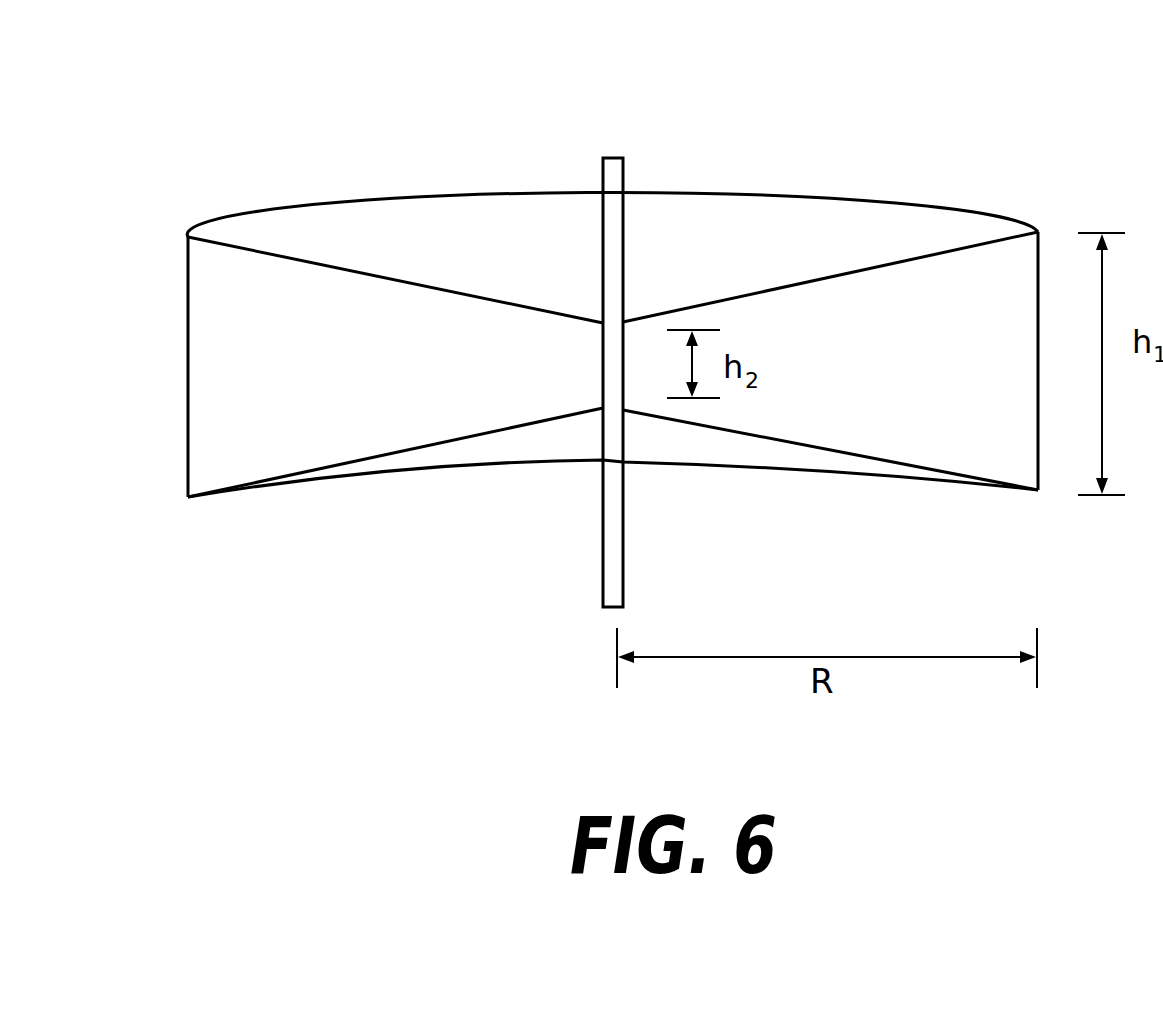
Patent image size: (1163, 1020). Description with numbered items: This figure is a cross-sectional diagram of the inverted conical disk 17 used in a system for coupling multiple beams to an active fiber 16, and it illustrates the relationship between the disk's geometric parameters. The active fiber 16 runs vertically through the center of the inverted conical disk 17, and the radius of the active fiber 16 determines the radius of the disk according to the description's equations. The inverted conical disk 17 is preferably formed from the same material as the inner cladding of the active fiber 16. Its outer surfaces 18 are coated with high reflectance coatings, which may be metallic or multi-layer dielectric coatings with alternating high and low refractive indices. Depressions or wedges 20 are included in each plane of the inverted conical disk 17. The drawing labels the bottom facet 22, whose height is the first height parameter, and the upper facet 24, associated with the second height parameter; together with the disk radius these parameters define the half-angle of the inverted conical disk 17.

The active fiber 16 is at (612, 158).
The inverted conical disk 17 is at (300, 174).
The outer surfaces 18 is at (807, 218).
The depressions or wedges 20 is at (1017, 262).
The bottom facet 22 is at (638, 415).
The upper facet 24 is at (1025, 468).